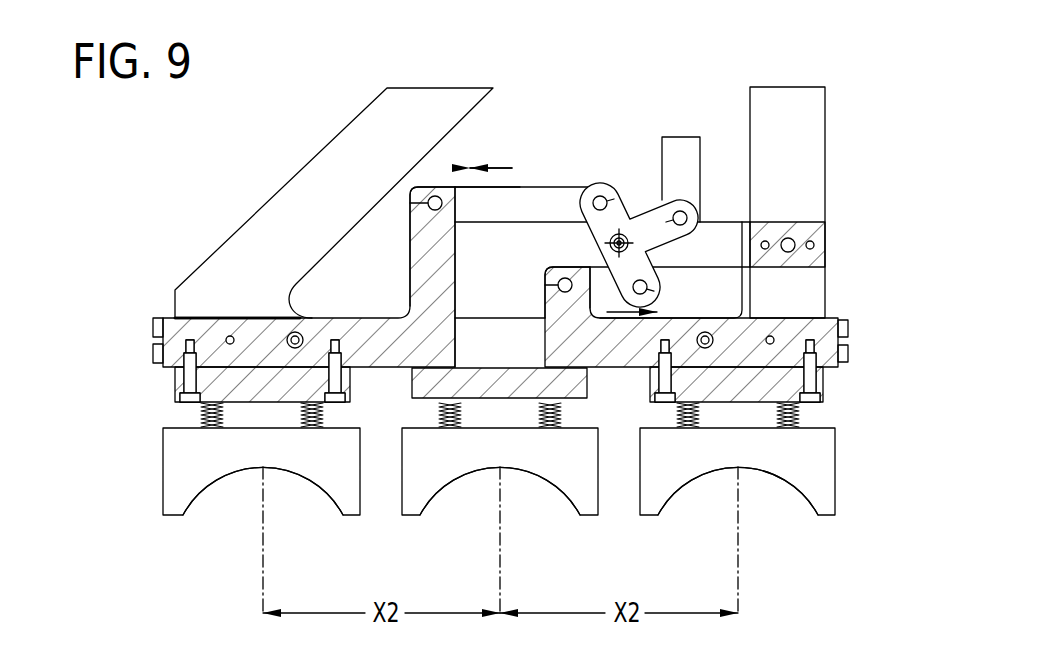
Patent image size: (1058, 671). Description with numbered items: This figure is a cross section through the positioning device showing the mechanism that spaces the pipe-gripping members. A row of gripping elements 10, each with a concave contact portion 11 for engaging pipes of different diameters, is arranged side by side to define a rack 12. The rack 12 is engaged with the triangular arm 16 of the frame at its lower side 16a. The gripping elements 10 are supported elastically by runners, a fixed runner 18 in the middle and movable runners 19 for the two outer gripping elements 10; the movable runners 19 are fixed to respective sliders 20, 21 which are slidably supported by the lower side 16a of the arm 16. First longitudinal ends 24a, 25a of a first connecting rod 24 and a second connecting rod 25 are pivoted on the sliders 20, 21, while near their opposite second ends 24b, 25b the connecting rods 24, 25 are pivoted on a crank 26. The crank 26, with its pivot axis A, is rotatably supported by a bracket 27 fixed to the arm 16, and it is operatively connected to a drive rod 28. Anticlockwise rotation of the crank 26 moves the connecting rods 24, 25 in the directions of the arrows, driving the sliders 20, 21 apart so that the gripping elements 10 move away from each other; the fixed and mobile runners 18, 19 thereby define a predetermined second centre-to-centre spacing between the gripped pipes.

The gripping element 10 is at (158, 478).
The contact portion 11 is at (200, 500).
The rack 12 is at (132, 410).
The arm 16 is at (375, 153).
The lower side of the arm 16a is at (362, 347).
The fixed runner 18 is at (510, 388).
The movable runner 19 is at (258, 393).
The first slider 20 is at (567, 327).
The second slider 21 is at (490, 343).
The first connecting rod 24 is at (731, 155).
The first longitudinal end of the first connecting rod 24a is at (546, 263).
The second end of the first connecting rod 24b is at (667, 292).
The second connecting rod 25 is at (510, 200).
The first longitudinal end of the second connecting rod 25a is at (443, 177).
The second end of the second connecting rod 25b is at (592, 180).
The crank 26 is at (647, 218).
The bracket 27 is at (697, 243).
The drive rod 28 is at (690, 175).
The pivot axis A is at (632, 215).